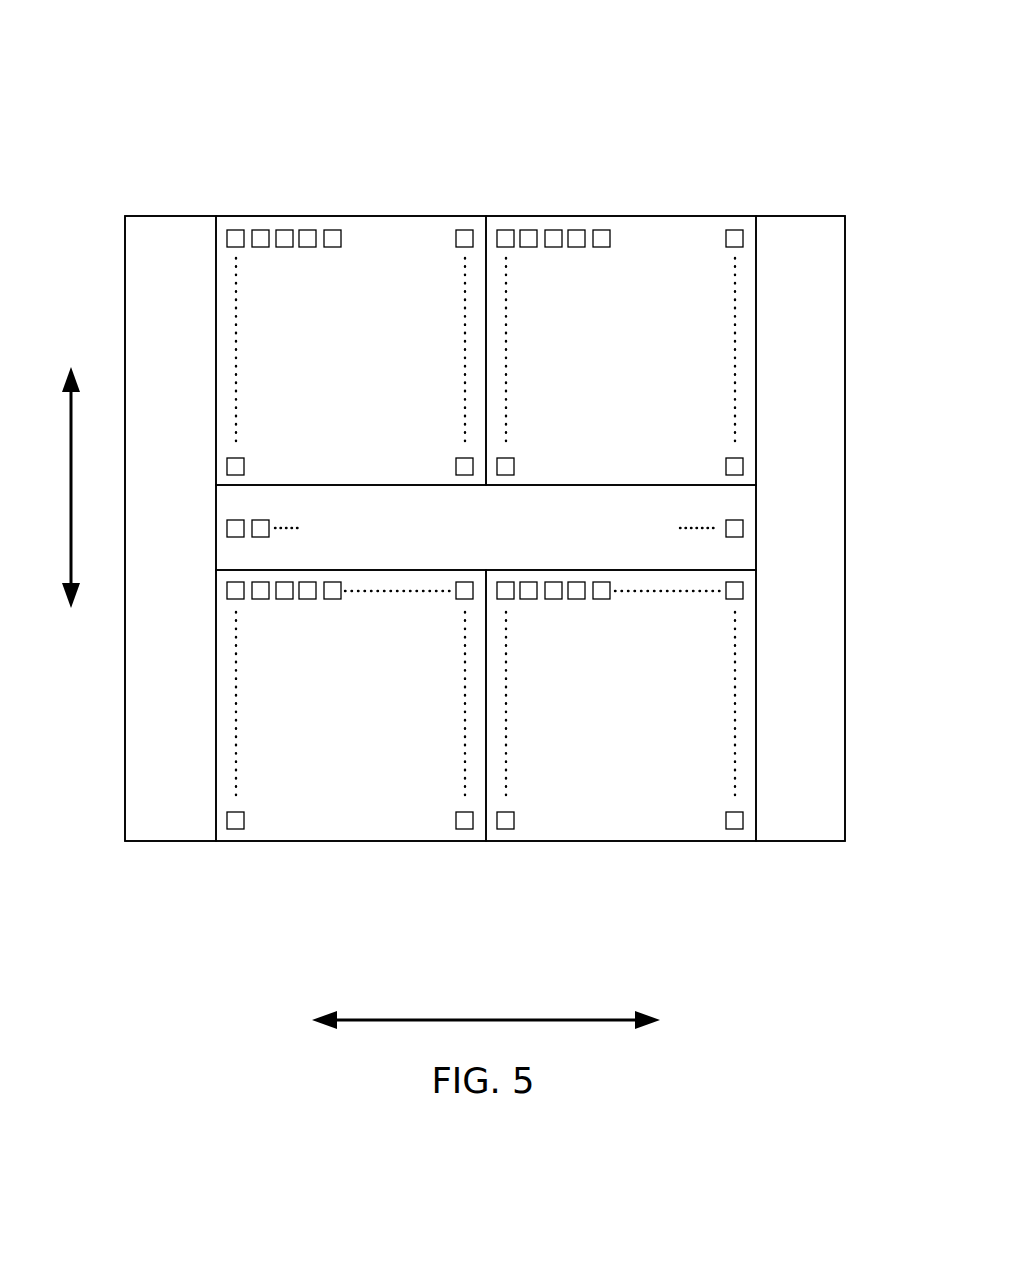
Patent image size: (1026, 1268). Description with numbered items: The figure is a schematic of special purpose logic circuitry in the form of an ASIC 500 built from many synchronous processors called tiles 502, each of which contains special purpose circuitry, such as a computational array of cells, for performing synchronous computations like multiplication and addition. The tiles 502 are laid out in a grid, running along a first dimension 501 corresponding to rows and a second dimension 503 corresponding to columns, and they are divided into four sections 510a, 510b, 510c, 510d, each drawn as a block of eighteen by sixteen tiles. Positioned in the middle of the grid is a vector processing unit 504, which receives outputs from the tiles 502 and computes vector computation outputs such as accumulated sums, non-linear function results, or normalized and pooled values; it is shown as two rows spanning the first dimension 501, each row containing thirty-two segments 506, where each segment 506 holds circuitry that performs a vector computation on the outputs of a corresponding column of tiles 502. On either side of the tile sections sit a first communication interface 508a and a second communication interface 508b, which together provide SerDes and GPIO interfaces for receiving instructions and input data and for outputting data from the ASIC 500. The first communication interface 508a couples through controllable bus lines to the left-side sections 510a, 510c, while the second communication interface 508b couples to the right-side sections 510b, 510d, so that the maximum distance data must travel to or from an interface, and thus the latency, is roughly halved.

The ASIC 500 is at (146, 34).
The first dimension 501 is at (485, 1017).
The tile 502 is at (236, 230).
The second dimension 503 is at (70, 489).
The vector processing unit 504 is at (728, 499).
The segment 506 is at (745, 528).
The first communication interface 508a is at (160, 232).
The second communication interface 508b is at (803, 232).
The tile section 510a is at (362, 170).
The tile section 510b is at (639, 170).
The tile section 510c is at (342, 858).
The tile section 510d is at (639, 858).